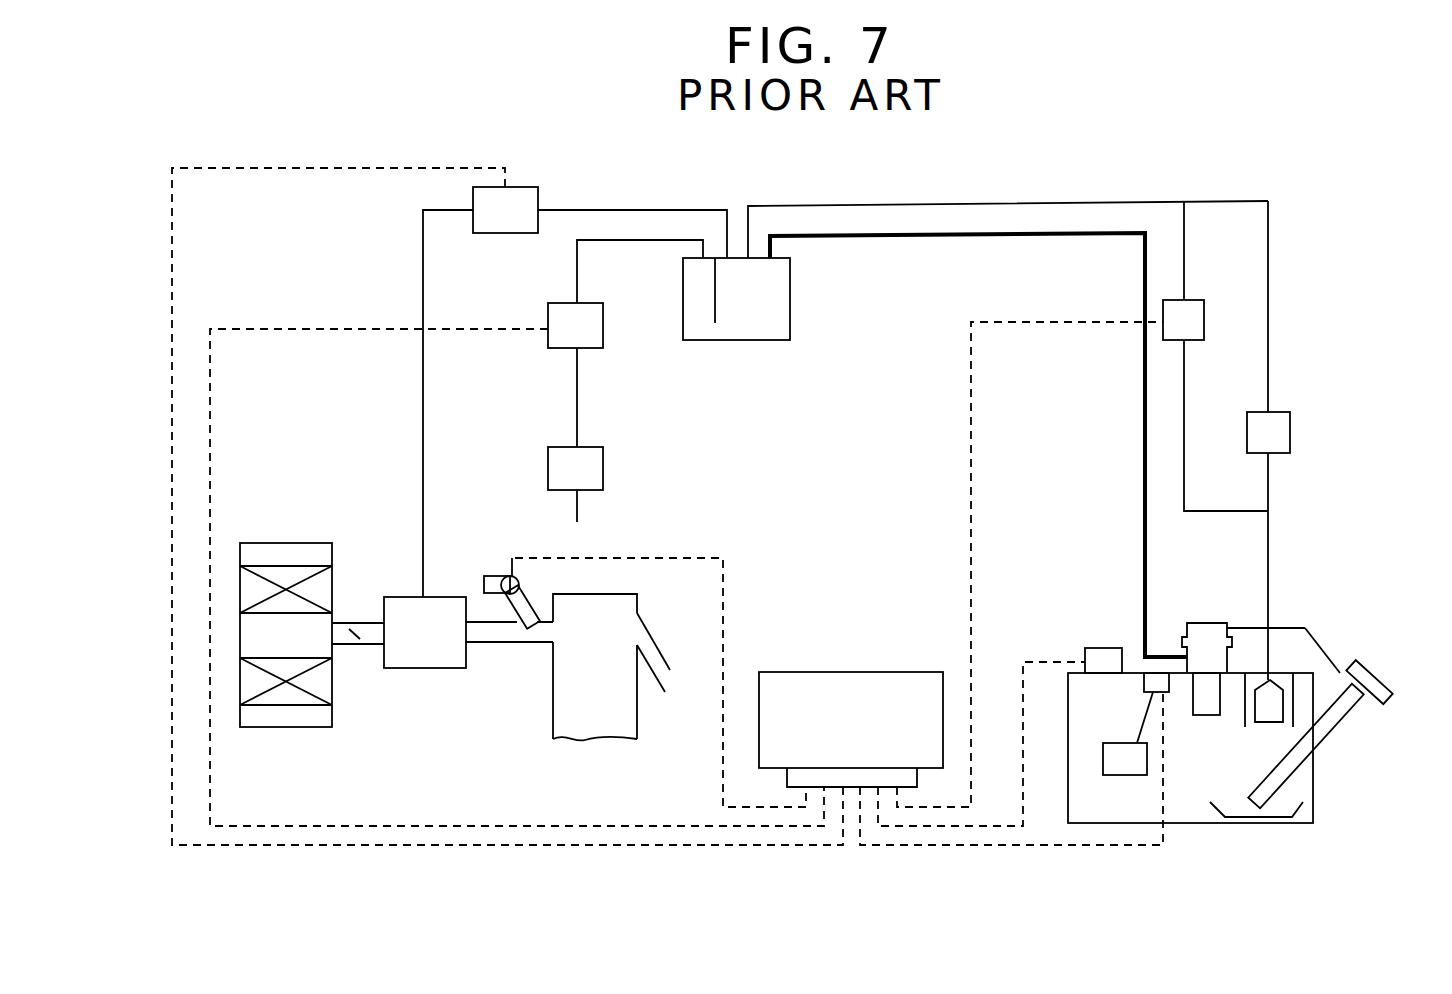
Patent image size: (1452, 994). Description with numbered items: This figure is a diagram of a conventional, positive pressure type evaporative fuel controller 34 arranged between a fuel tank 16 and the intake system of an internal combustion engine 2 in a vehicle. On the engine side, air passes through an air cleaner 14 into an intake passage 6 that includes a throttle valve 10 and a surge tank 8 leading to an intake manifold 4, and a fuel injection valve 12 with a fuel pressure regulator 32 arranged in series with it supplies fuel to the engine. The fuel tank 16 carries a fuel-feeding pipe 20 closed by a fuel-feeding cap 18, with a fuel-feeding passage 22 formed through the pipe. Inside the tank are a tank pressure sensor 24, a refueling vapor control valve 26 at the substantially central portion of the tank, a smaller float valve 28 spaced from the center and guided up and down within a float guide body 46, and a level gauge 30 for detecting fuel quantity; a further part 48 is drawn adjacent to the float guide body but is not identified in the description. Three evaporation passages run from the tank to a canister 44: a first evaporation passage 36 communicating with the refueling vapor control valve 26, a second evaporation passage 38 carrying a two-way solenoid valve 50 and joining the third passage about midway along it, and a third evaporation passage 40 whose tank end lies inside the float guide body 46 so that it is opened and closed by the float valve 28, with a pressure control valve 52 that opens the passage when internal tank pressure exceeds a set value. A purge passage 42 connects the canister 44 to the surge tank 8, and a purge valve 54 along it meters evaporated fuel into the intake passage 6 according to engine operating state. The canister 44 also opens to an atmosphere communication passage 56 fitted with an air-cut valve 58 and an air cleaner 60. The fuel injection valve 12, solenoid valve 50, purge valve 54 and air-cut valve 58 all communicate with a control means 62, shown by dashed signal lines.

The internal combustion engine 2 is at (638, 723).
The intake manifold 4 is at (491, 650).
The intake passage 6 is at (515, 630).
The surge tank 8 is at (427, 668).
The throttle valve 10 is at (355, 637).
The fuel injection valve 12 is at (528, 605).
The air cleaner 14 is at (292, 727).
The fuel tank 16 is at (1202, 826).
The fuel-feeding cap 18 is at (1378, 690).
The fuel-feeding pipe 20 is at (1348, 713).
The fuel-feeding passage 22 is at (1318, 740).
The tank pressure sensor 24 is at (1097, 648).
The refueling vapor control valve 26 is at (1202, 620).
The float valve 28 is at (1288, 655).
The level gauge 30 is at (1130, 767).
The fuel pressure regulator 32 is at (492, 578).
The evaporative fuel controller 34 is at (1245, 185).
The first evaporation passage 36 is at (1143, 402).
The second evaporation passage 38 is at (1184, 246).
The third evaporation passage 40 is at (1268, 246).
The purge passage 42 is at (647, 205).
The canister 44 is at (780, 293).
The float guide body 46 is at (1290, 708).
The valve housing 48 is at (1288, 627).
The solenoid valve 50 is at (1196, 340).
The pressure control valve 52 is at (1287, 430).
The purge valve 54 is at (530, 188).
The atmosphere communication passage 56 is at (577, 270).
The air-cut valve 58 is at (597, 334).
The air cleaner 60 is at (598, 470).
The control means 62 is at (851, 685).